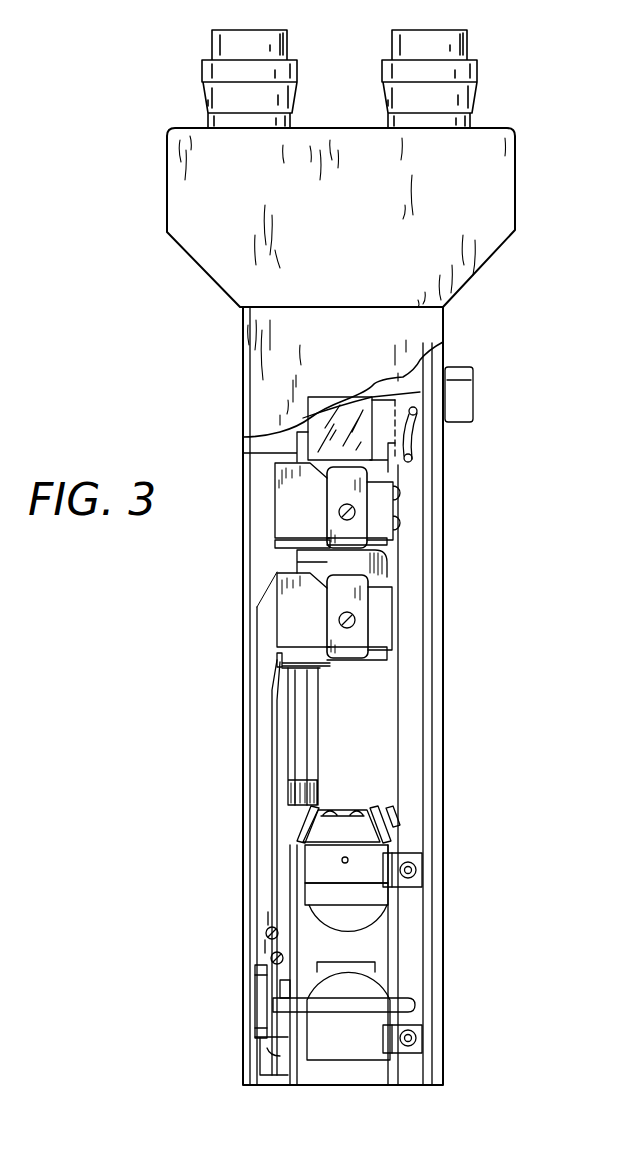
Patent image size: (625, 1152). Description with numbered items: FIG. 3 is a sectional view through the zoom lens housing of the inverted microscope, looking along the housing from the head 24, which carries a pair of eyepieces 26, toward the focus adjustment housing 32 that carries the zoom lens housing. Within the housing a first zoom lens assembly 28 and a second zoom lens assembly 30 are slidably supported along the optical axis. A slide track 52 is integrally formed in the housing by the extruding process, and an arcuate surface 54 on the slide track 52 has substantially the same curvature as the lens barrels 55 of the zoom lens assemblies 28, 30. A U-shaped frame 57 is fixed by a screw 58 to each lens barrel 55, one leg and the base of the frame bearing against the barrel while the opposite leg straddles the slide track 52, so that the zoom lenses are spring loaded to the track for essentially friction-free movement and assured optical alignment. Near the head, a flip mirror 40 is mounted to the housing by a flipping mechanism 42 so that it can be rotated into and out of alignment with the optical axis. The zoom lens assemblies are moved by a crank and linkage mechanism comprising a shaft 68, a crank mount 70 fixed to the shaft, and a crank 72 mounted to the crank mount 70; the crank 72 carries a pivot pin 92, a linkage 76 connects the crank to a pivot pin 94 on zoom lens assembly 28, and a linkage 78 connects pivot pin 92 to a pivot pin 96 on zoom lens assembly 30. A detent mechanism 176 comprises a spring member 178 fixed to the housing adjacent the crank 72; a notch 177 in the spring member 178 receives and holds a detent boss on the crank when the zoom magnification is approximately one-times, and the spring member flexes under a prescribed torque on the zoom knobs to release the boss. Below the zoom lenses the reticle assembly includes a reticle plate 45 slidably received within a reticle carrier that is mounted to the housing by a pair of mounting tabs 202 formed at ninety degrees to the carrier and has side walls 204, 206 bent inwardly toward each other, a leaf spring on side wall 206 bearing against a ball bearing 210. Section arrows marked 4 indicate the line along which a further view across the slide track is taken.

The section line 4- 4 is at (212, 703).
The head 24 is at (520, 190).
The eyepieces 26 is at (394, 40).
The zoom lens assembly 28 is at (398, 471).
The zoom lens assembly 30 is at (398, 563).
The focus adjustment housing 32 is at (240, 937).
The mirror 40 is at (337, 400).
The flipping mechanism 42 is at (484, 395).
The reticle plate 45 is at (358, 832).
The slide track 52 is at (288, 743).
The arcuate surface 54 is at (285, 707).
The lens barrels 55 is at (243, 453).
The U-shaped frame 57 is at (275, 532).
The screw 58 is at (347, 504).
The shaft 68 is at (357, 1012).
The crank mount 70 is at (260, 1008).
The crank 72 is at (273, 1020).
The linkage 76 is at (257, 753).
The linkage 78 is at (272, 863).
The pivot pin 92 is at (288, 980).
The pivot pin 94 is at (302, 530).
The pivot pin 96 is at (310, 666).
The detent mechanism 176 is at (268, 904).
The notch 177 is at (270, 1054).
The spring member 178 is at (244, 956).
The mounting tabs 202 is at (352, 803).
The side wall 204 is at (303, 818).
The side wall 206 is at (390, 800).
The ball bearing 210 is at (378, 820).